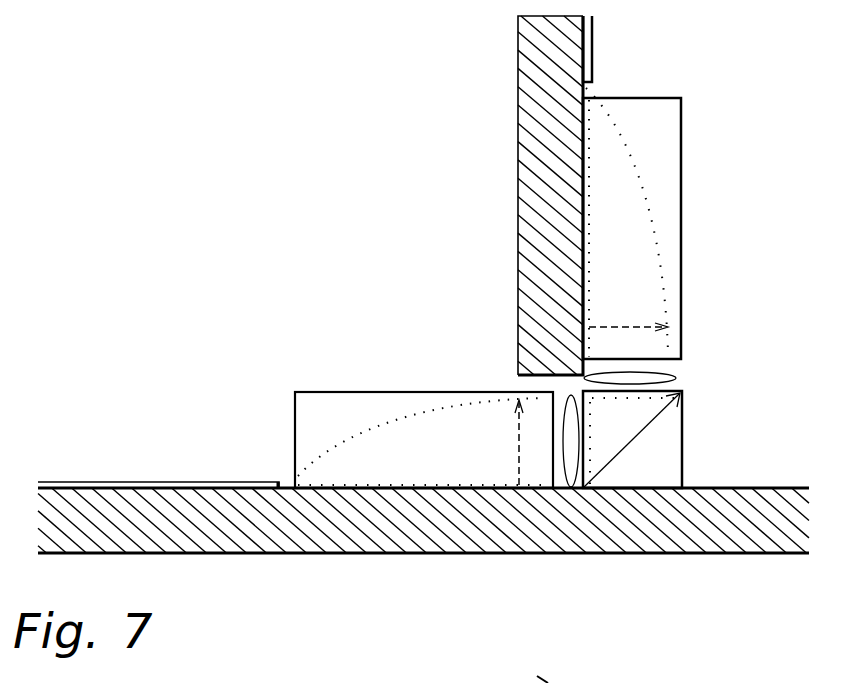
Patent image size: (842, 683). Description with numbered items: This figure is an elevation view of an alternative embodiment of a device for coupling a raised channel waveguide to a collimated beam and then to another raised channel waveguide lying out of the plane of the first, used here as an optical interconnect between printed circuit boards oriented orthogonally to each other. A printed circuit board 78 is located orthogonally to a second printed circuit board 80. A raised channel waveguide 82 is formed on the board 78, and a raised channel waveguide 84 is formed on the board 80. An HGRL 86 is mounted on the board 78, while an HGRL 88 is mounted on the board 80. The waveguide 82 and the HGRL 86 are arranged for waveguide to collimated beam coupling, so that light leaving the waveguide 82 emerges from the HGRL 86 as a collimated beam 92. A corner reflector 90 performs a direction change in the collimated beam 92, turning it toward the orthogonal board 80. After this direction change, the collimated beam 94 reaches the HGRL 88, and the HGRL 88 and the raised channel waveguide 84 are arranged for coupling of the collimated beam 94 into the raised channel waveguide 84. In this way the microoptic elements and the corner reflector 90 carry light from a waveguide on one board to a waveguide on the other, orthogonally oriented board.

The printed circuit board 78 is at (173, 538).
The printed circuit board 80 is at (536, 101).
The raised channel waveguide 82 is at (125, 480).
The raised channel waveguide 84 is at (594, 57).
The HGRL 86 is at (412, 390).
The HGRL 88 is at (682, 222).
The corner reflector 90 is at (682, 455).
The collimated beam 92 is at (569, 487).
The collimated beam 94 is at (674, 377).